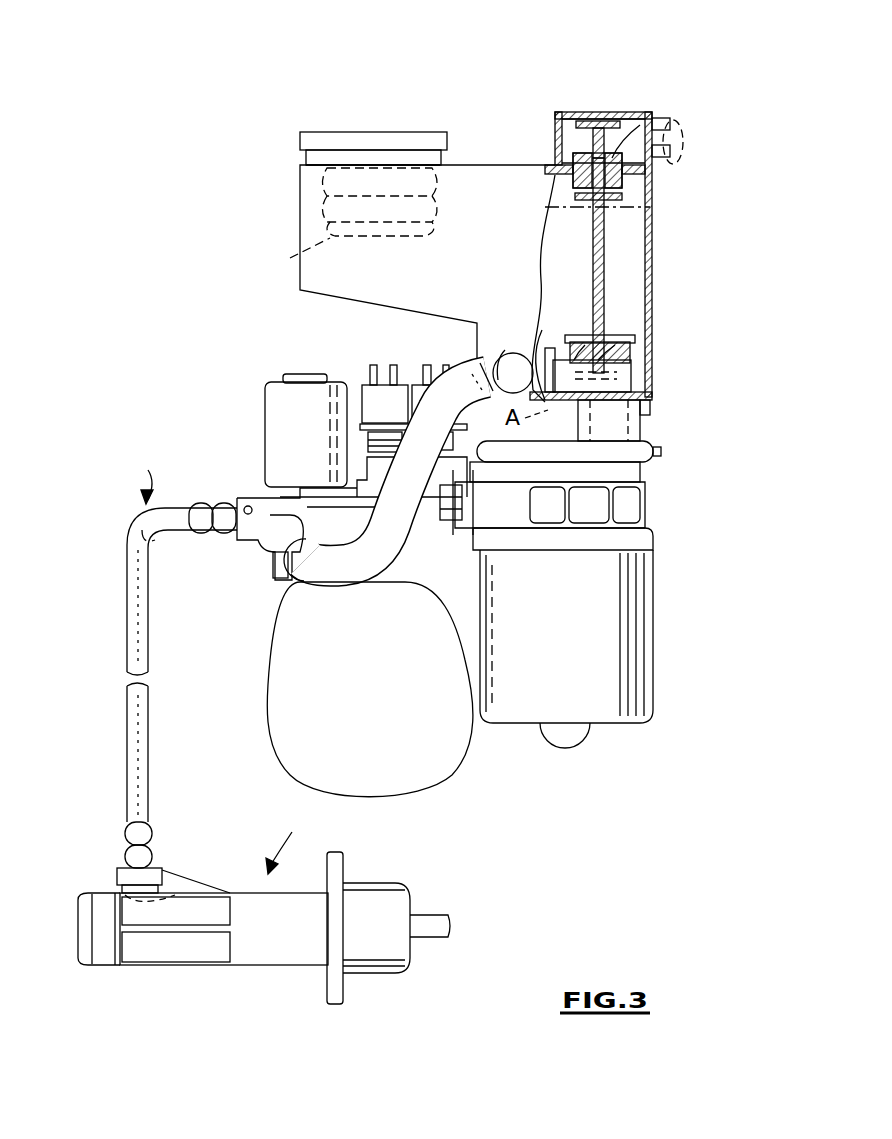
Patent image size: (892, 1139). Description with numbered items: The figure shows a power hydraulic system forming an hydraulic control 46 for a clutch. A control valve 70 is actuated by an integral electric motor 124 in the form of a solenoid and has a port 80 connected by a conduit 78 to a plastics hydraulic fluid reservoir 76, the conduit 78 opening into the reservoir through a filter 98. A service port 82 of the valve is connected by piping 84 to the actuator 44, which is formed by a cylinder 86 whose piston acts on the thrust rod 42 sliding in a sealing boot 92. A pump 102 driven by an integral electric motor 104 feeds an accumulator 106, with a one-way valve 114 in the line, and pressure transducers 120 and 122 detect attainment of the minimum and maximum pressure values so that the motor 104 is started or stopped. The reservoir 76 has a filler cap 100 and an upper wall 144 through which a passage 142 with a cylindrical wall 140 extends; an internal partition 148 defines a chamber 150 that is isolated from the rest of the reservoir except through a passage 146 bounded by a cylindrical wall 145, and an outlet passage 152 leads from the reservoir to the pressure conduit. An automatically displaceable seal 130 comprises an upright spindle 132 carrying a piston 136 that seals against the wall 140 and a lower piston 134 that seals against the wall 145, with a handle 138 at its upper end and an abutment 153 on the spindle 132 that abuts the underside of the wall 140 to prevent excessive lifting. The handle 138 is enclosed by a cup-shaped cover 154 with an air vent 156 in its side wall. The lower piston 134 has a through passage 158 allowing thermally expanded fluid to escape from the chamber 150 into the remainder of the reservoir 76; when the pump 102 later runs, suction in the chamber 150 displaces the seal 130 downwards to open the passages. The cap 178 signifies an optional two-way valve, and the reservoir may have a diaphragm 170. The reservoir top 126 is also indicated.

The thrust rod 42 is at (432, 914).
The actuator 44 is at (277, 842).
The hydraulic control 46 is at (142, 474).
The control valve 70 is at (248, 540).
The hydraulic fluid reservoir 76 is at (325, 218).
The conduit 78 is at (378, 584).
The port 80 is at (278, 578).
The service port 82 is at (247, 506).
The piping 84 is at (127, 600).
The cylinder 86 is at (290, 962).
The sealing boot 92 is at (392, 888).
The filter 98 is at (548, 390).
The filler cap 100 is at (304, 132).
The pump 102 is at (636, 474).
The electric motor 104 is at (632, 604).
The accumulator 106 is at (275, 660).
The one-way valve 114 is at (484, 538).
The pressure transducer 120 is at (440, 445).
The pressure transducer 122 is at (368, 468).
The electric motor 124 is at (268, 440).
The reservoir top 126 is at (312, 168).
The automatically displaceable seal 130 is at (602, 262).
The spindle 132 is at (604, 292).
The lower piston 134 is at (636, 350).
The piston 136 is at (624, 182).
The handle 138 is at (598, 128).
The cylindrical wall 140 is at (573, 160).
The passage 142 is at (640, 125).
The upper wall 144 is at (476, 165).
The cylindrical wall 145 is at (643, 372).
The passage 146 is at (632, 378).
The internal partition 148 is at (512, 355).
The chamber 150 is at (652, 400).
The outlet passage 152 is at (650, 414).
The abutment 153 is at (622, 198).
The cup-shaped cover 154 is at (560, 112).
The air vent 156 is at (664, 120).
The through passage 158 is at (618, 345).
The diaphragm 170 is at (279, 253).
The cap 178 is at (683, 142).